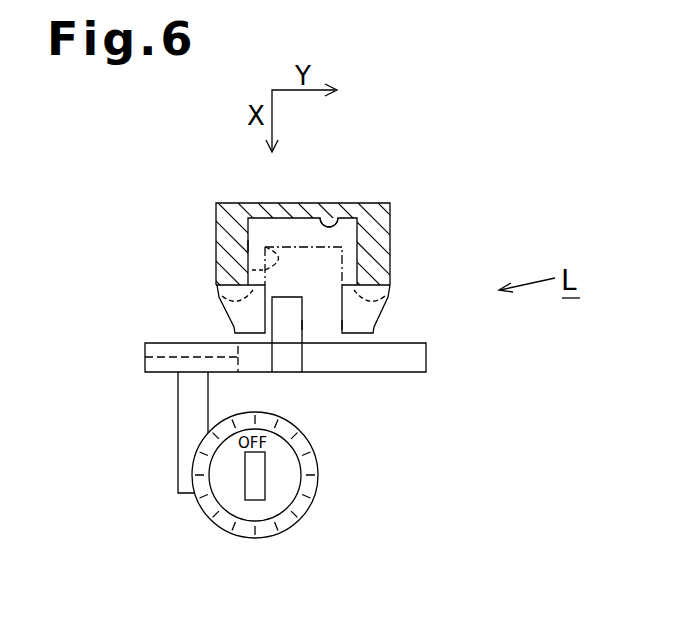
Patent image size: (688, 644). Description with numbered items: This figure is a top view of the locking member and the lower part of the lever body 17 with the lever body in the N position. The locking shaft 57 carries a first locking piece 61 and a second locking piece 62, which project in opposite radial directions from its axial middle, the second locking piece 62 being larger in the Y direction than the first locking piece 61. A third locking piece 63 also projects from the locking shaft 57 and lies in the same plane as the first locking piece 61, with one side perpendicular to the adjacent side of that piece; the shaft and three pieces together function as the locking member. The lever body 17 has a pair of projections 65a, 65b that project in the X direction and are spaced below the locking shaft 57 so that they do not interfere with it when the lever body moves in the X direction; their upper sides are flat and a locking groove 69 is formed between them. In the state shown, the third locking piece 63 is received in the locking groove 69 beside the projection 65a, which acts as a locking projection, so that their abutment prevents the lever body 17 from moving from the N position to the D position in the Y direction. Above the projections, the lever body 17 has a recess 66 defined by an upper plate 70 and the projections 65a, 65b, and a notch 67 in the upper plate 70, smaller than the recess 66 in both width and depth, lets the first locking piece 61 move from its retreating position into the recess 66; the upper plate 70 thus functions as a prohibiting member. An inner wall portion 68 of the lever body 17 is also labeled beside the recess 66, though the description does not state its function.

The lever body 17 is at (391, 212).
The recess 66 is at (320, 216).
The inner wall 68 is at (253, 254).
The notch 67 is at (250, 270).
The projection 65a is at (240, 326).
The projection 65b is at (363, 323).
The upper plate 70 is at (217, 292).
The locking shaft 57 is at (415, 358).
The second locking piece 62 is at (145, 357).
The first locking piece 61 is at (287, 360).
The third locking piece 63 is at (297, 323).
The locking groove 69 is at (333, 325).